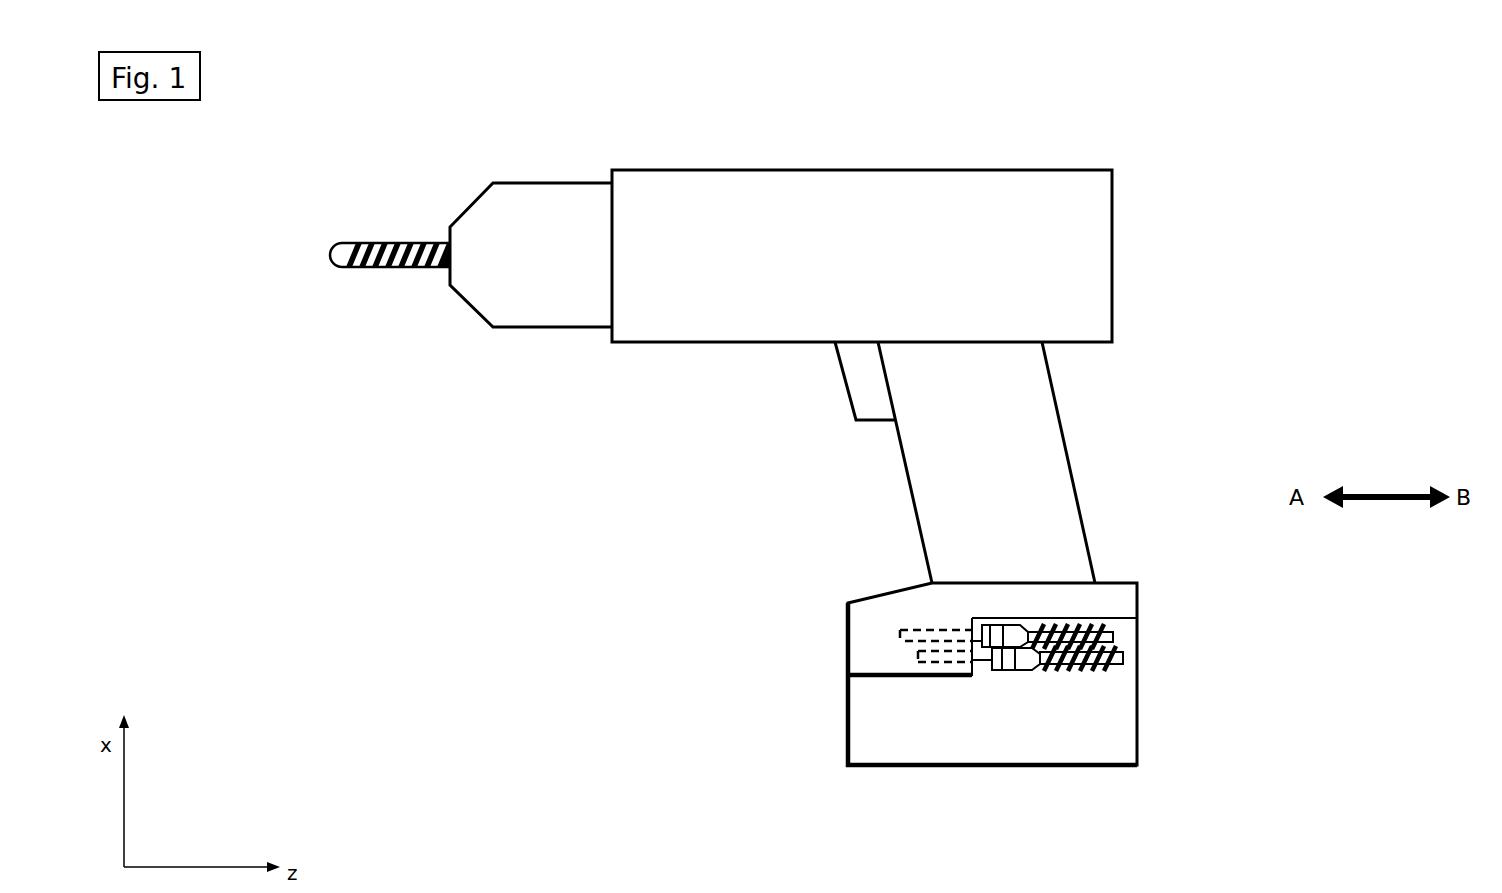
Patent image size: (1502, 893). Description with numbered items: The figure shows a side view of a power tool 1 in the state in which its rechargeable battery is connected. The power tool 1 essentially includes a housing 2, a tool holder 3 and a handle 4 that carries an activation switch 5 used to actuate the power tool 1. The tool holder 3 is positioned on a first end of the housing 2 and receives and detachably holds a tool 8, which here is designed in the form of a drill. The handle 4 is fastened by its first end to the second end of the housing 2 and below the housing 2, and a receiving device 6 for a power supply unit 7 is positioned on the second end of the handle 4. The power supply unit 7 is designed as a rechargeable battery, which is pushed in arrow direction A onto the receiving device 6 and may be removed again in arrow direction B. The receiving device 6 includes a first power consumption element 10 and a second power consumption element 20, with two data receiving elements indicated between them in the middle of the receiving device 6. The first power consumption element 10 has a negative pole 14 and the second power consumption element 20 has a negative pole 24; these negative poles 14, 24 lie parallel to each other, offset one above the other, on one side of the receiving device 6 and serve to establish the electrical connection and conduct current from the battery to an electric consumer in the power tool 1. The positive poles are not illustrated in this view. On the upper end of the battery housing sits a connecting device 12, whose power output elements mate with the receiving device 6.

The power tool 1 is at (1262, 170).
The housing 2 is at (900, 190).
The tool holder 3 is at (478, 288).
The handle 4 is at (1048, 483).
The activation switch 5 is at (857, 377).
The receiving device 6 is at (818, 617).
The power supply unit 7 is at (1107, 727).
The tool 8 is at (388, 250).
The first power consumption element 10 is at (888, 638).
The connecting device 12 is at (1123, 630).
The negative pole 14 is at (927, 632).
The second power consumption element 20 is at (908, 663).
The negative pole 24 is at (950, 655).